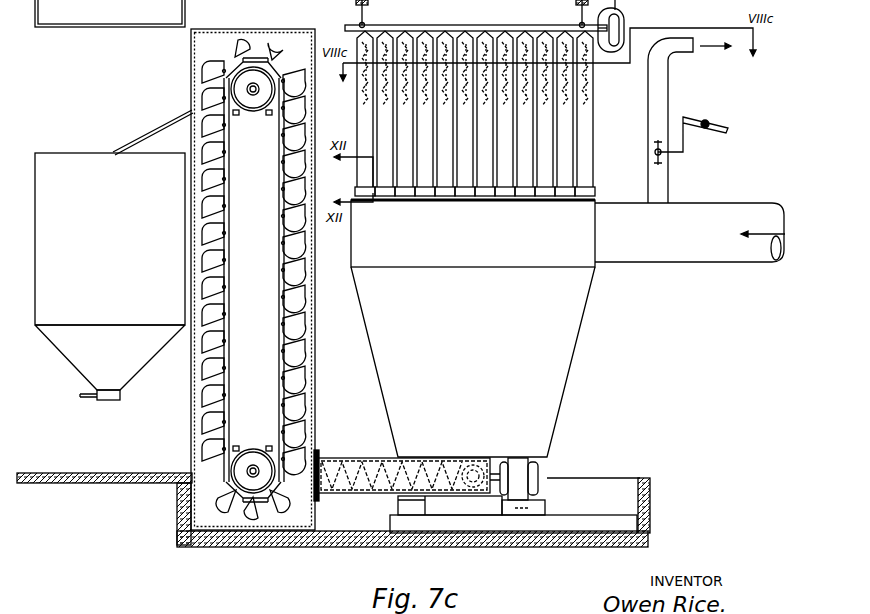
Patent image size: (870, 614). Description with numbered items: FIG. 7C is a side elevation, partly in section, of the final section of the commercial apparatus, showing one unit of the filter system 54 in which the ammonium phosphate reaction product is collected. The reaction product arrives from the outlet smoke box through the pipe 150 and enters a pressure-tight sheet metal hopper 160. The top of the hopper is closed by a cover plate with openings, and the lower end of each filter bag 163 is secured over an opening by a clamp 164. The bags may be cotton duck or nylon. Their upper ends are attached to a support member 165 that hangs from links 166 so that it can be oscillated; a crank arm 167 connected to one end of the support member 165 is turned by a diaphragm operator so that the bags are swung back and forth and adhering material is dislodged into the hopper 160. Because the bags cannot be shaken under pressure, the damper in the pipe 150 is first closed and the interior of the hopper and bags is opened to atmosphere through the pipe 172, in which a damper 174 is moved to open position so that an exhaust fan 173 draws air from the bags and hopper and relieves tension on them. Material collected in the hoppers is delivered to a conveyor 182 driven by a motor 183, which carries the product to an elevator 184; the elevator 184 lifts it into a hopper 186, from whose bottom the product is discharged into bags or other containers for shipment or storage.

The filter system 54 is at (640, 305).
The pipe 150 is at (757, 259).
The hopper 160 is at (570, 346).
The filter bag 163 is at (360, 101).
The clamp 164 is at (592, 196).
The support member 165 is at (473, 26).
The links 166 is at (366, 15).
The crank arm 167 is at (628, 20).
The pipe 172 is at (670, 182).
The exhaust fan 173 is at (676, 60).
The damper 174 is at (656, 158).
The conveyor 182 is at (375, 462).
The motor 183 is at (522, 470).
The elevator 184 is at (263, 246).
The hopper 186 is at (112, 246).